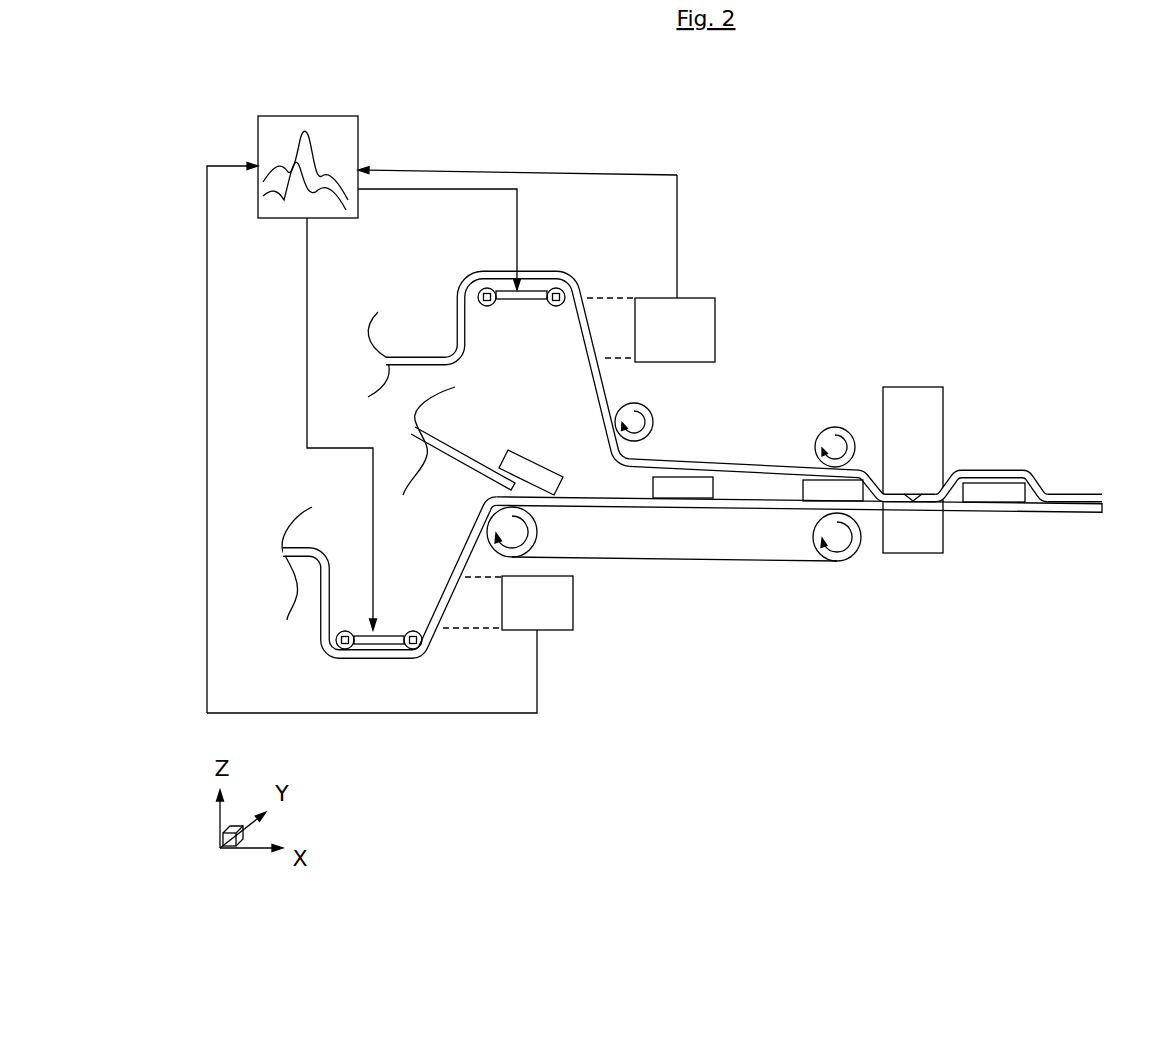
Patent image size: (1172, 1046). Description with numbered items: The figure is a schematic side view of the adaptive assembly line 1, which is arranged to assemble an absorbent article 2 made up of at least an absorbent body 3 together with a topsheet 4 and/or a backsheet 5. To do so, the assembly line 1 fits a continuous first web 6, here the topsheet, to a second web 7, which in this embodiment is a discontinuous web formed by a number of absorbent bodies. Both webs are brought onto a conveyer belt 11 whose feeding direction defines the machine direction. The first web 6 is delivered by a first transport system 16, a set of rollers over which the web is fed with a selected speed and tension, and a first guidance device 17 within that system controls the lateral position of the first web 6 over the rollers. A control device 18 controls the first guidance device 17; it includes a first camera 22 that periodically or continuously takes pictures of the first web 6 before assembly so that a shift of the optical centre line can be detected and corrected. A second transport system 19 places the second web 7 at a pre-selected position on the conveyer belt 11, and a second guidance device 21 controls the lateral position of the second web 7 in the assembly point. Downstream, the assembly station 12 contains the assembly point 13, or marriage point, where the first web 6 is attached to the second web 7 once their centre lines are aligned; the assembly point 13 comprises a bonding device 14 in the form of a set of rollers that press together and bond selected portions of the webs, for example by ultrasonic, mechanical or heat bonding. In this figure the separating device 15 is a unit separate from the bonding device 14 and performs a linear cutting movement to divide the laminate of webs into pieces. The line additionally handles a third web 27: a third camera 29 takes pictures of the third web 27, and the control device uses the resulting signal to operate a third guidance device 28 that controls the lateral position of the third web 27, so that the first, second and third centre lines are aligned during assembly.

The adaptive assembly line 1 is at (1059, 157).
The absorbent article 2 is at (1033, 463).
The absorbent body 3 is at (993, 493).
The topsheet 4 is at (995, 472).
The backsheet 5 is at (1052, 515).
The first web 6 is at (431, 333).
The second web 7 is at (691, 498).
The conveyer belt 11 is at (667, 572).
The assembly station 12 is at (792, 379).
The assembly point 13 is at (851, 485).
The bonding device 14 is at (836, 412).
The separating device 15 is at (913, 470).
The first transport system 16 is at (575, 265).
The first guidance device 17 is at (520, 315).
The control device 18 is at (442, 414).
The second transport system 19 is at (404, 426).
The second guidance device 21 is at (461, 475).
The first camera 22 is at (651, 268).
The third web 27 is at (310, 619).
The third guidance device 28 is at (387, 651).
The third camera 29 is at (390, 644).